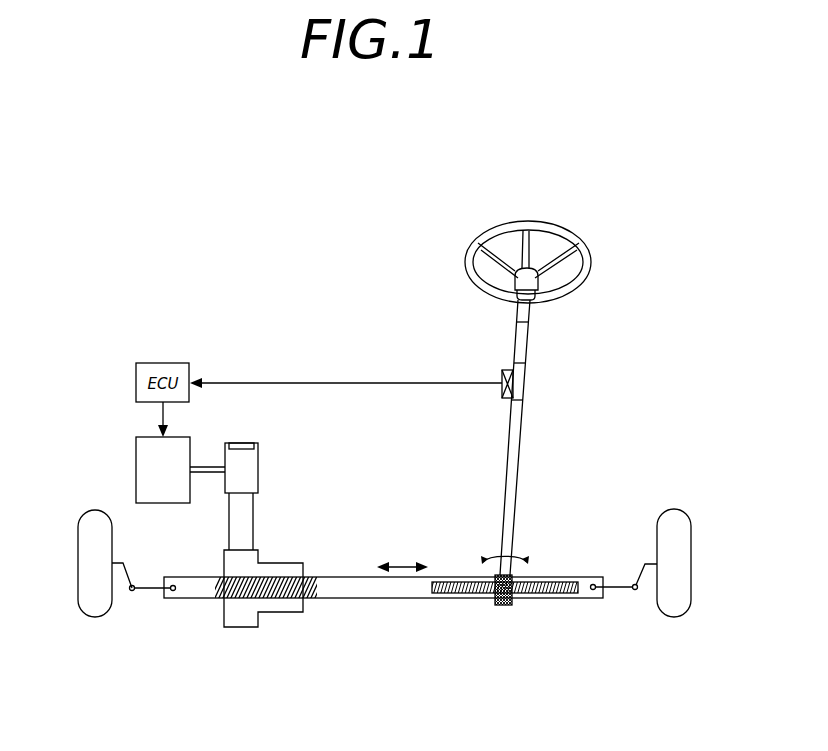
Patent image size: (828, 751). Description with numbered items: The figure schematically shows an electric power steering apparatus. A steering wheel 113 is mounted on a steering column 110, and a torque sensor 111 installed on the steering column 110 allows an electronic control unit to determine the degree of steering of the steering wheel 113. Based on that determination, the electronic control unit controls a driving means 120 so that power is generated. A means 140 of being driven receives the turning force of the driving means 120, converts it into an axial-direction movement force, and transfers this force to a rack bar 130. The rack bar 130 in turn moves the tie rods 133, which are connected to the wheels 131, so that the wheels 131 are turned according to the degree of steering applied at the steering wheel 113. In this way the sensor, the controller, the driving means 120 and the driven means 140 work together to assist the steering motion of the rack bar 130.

The steering column 110 is at (532, 404).
The torque sensor 111 is at (503, 371).
The steering wheel 113 is at (548, 227).
The driving means 120 is at (125, 436).
The rack bar 130 is at (333, 582).
The wheel 131 is at (672, 511).
The tie rod 133 is at (620, 587).
The means of being driven 140 is at (283, 630).